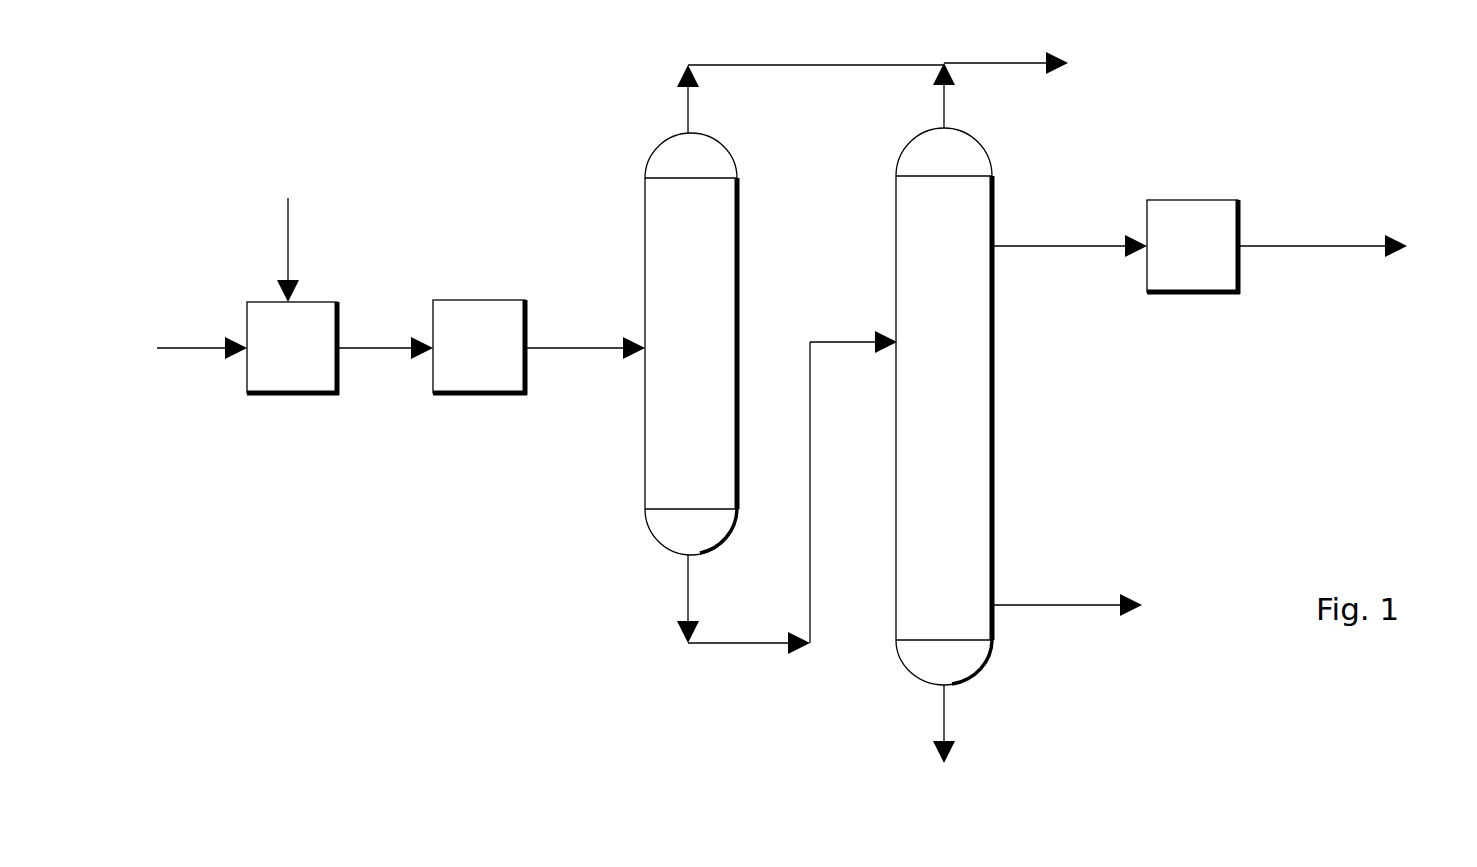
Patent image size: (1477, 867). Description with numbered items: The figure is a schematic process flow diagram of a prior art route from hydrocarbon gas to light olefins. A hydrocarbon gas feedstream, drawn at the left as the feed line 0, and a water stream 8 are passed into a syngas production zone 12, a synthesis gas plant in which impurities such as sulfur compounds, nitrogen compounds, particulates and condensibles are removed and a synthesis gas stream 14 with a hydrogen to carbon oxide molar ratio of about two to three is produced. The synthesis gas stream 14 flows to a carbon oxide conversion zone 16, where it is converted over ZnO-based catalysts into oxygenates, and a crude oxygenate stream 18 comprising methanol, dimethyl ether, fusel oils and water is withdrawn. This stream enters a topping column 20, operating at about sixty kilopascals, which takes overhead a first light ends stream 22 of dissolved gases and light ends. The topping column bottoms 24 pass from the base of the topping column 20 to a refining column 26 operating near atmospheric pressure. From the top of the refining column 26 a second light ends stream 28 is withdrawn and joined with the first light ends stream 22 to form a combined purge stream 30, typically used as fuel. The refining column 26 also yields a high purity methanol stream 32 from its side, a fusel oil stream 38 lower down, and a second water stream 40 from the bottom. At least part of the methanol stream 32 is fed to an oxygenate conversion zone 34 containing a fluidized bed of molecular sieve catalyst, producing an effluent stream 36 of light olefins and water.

The feed stream 0 is at (190, 348).
The water stream 8 is at (288, 223).
The syngas production zone 12 is at (300, 395).
The synthesis gas stream 14 is at (368, 348).
The carbon oxide conversion zone 16 is at (488, 395).
The crude oxygenate stream 18 is at (590, 348).
The topping column 20 is at (739, 240).
The first light ends stream 22 is at (770, 65).
The topping column bottoms 24 is at (740, 643).
The refining column 26 is at (994, 398).
The second light ends stream 28 is at (946, 102).
The combined purge stream 30 is at (972, 63).
The high purity methanol stream 32 is at (1052, 246).
The oxygenate conversion zone 34 is at (1185, 294).
The effluent stream 36 is at (1330, 246).
The fusel oil stream 38 is at (1088, 605).
The second water stream 40 is at (946, 713).